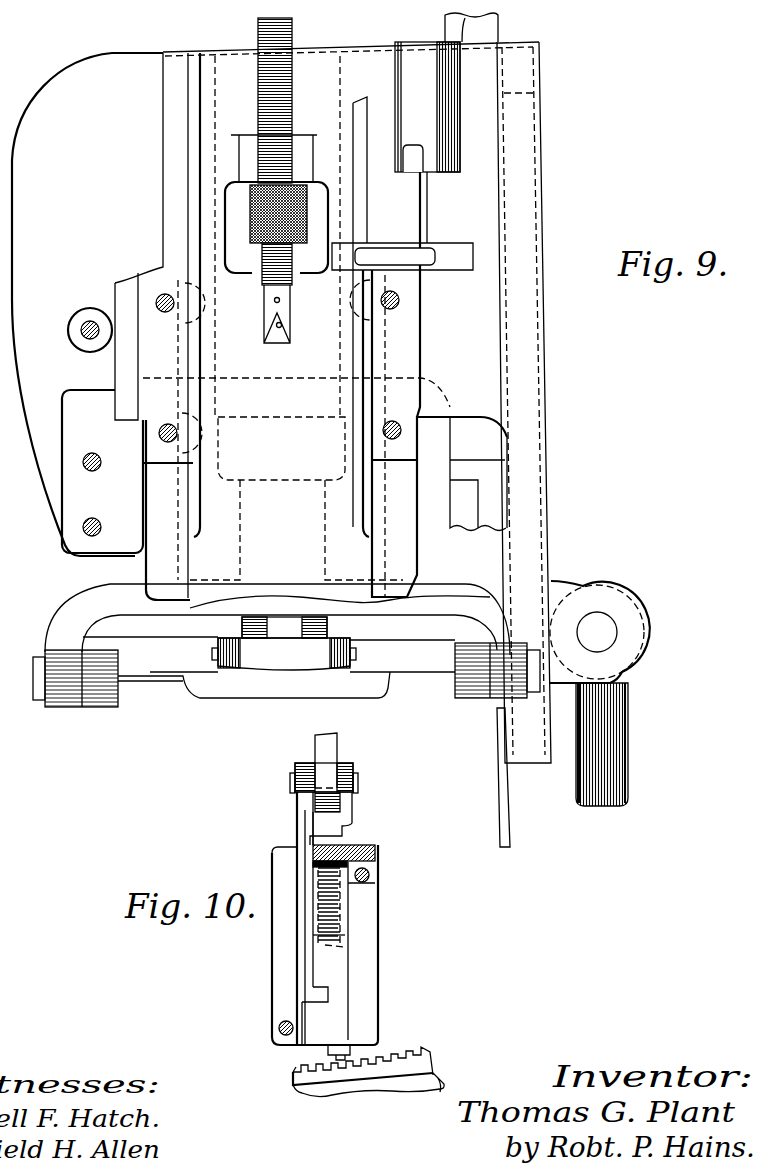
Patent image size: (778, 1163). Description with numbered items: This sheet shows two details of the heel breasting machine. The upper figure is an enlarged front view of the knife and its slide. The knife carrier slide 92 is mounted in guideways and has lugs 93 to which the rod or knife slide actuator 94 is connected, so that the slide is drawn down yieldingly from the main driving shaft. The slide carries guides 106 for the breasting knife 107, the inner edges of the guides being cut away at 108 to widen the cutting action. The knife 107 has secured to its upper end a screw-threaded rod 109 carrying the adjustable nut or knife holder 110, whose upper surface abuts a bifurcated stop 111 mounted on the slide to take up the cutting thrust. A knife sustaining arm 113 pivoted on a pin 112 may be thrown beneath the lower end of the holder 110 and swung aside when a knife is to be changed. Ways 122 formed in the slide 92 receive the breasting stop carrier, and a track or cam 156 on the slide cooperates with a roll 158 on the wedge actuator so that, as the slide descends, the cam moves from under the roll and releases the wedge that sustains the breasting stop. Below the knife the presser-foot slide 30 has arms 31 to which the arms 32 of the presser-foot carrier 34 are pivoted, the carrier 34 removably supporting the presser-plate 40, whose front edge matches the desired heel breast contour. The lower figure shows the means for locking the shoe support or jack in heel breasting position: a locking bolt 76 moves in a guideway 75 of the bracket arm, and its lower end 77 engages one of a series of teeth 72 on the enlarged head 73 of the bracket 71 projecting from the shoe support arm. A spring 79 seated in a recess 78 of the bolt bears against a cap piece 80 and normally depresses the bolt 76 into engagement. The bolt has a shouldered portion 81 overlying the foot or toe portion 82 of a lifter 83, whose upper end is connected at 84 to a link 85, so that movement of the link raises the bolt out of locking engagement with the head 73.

In FIG. 9, the presser-foot slide 30 is at (333, 48).
In FIG. 9, the knife carrier slide 92 is at (490, 373).
In FIG. 9, the lugs 93 is at (638, 637).
In FIG. 9, the rod or knife slide actuator 94 is at (618, 753).
In FIG. 9, the pin 112 is at (423, 160).
In FIG. 9, the knife sustaining arm 113 is at (383, 255).
In FIG. 9, the adjustable nut or knife holder 110 is at (305, 218).
In FIG. 9, the stop 111 is at (247, 155).
In FIG. 9, the screw-threaded rod 109 is at (257, 22).
In FIG. 9, the breasting knife 107 is at (230, 300).
In FIG. 9, the cut-away portions 108 is at (365, 533).
In FIG. 9, the ways 122 is at (187, 77).
In FIG. 9, the roll 158 is at (92, 300).
In FIG. 9, the track or cam 156 is at (120, 365).
In FIG. 9, the guides 106 is at (163, 547).
In FIG. 9, the arms 31 is at (67, 620).
In FIG. 9, the arms of the presser-foot carrier 32 is at (142, 667).
In FIG. 9, the presser-foot carrier 34 is at (420, 698).
In FIG. 9, the presser-plate 40 is at (297, 660).
In FIG. 10, the link 85 is at (322, 745).
In FIG. 10, the connection of lifter to link 84 is at (310, 785).
In FIG. 10, the cap piece 80 is at (375, 850).
In FIG. 10, the spring 79 is at (347, 864).
In FIG. 10, the guideway 75 is at (343, 883).
In FIG. 10, the locking bolt 76 is at (350, 968).
In FIG. 10, the recess 78 is at (345, 920).
In FIG. 10, the lifter 83 is at (313, 936).
In FIG. 10, the shouldered portion 81 is at (325, 987).
In FIG. 10, the foot or toe portion 82 is at (317, 997).
In FIG. 10, the lower end of locking bolt 77 is at (348, 1053).
In FIG. 10, the teeth 72 is at (296, 1067).
In FIG. 10, the head 73 is at (358, 1068).
In FIG. 10, the bracket 71 is at (398, 1090).